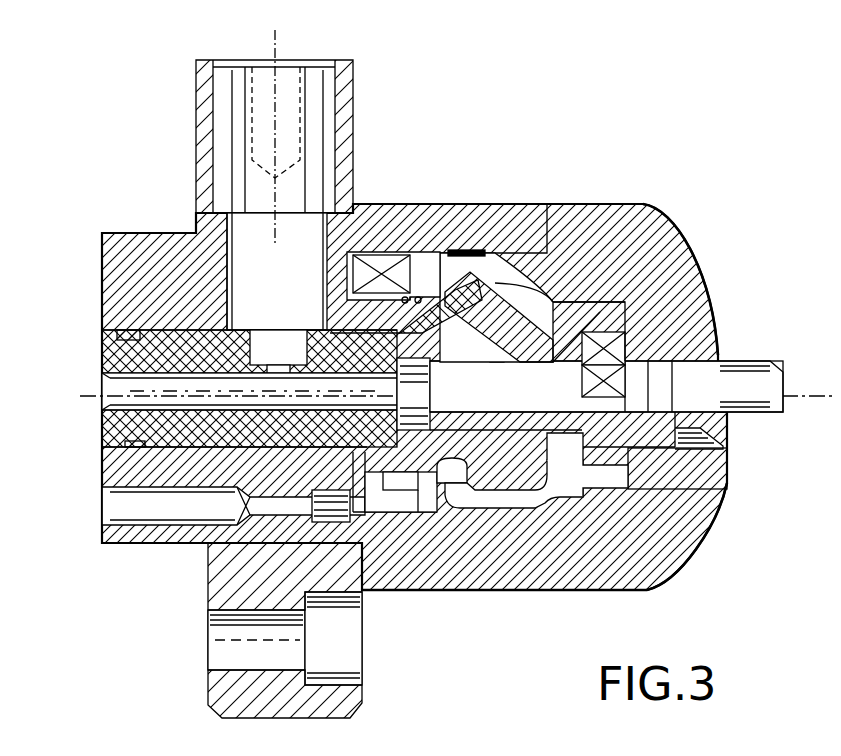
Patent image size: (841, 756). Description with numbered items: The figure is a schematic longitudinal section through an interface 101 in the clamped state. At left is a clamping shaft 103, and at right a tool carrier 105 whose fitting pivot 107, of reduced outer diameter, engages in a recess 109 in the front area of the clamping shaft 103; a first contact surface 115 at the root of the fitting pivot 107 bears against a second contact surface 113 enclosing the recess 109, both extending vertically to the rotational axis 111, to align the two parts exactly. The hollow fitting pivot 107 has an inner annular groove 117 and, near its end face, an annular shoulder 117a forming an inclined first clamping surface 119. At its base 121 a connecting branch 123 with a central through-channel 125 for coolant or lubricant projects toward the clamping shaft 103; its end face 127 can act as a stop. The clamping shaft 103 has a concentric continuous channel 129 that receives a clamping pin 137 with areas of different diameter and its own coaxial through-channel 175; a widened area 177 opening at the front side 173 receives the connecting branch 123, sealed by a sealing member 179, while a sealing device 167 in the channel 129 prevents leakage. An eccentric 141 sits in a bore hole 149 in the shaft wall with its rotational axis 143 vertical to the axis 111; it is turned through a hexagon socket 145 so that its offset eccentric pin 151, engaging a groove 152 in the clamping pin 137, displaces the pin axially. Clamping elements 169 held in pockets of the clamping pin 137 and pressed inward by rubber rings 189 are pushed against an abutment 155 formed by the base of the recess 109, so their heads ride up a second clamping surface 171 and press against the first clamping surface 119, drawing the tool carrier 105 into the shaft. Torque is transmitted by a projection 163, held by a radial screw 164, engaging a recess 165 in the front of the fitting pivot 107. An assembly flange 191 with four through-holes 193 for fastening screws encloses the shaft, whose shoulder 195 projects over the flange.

The interface 101 is at (471, 95).
The clamping shaft 103 is at (104, 233).
The tool carrier 105 is at (643, 206).
The fitting pivot 107 is at (432, 272).
The recess 109 is at (572, 589).
The rotational axis 111 is at (800, 396).
The second contact surface 113 is at (580, 206).
The first contact surface 115 is at (548, 210).
The annular groove 117 is at (531, 566).
The annular shoulder 117a is at (455, 561).
The first clamping surface 119 is at (442, 300).
The base 121 is at (640, 490).
The connecting branch 123 is at (740, 433).
The central through-channel 125 is at (770, 413).
The end face 127 is at (682, 555).
The continuous channel 129 is at (102, 459).
The clamping pin 137 is at (102, 347).
The eccentric 141 is at (235, 106).
The rotational axis of the eccentric 143 is at (275, 49).
The hexagon socket 145 is at (300, 62).
The bore hole 149 is at (228, 245).
The eccentric pin 151 is at (285, 340).
The groove 152 is at (250, 354).
The abutment 155 is at (372, 556).
The projection 163 is at (395, 561).
The screw 164 is at (190, 546).
The recess 165 is at (383, 255).
The sealing device 167 is at (102, 492).
The clamping elements 169 is at (388, 325).
The second clamping surface 171 is at (500, 561).
The front side 173 is at (612, 332).
The through-channel 175 is at (102, 398).
The widened area 177 is at (430, 382).
The sealing member 179 is at (497, 362).
The rubber rings 189 is at (410, 258).
The assembly flange 191 is at (220, 693).
The through-holes 193 is at (240, 662).
The shoulder 195 is at (198, 556).